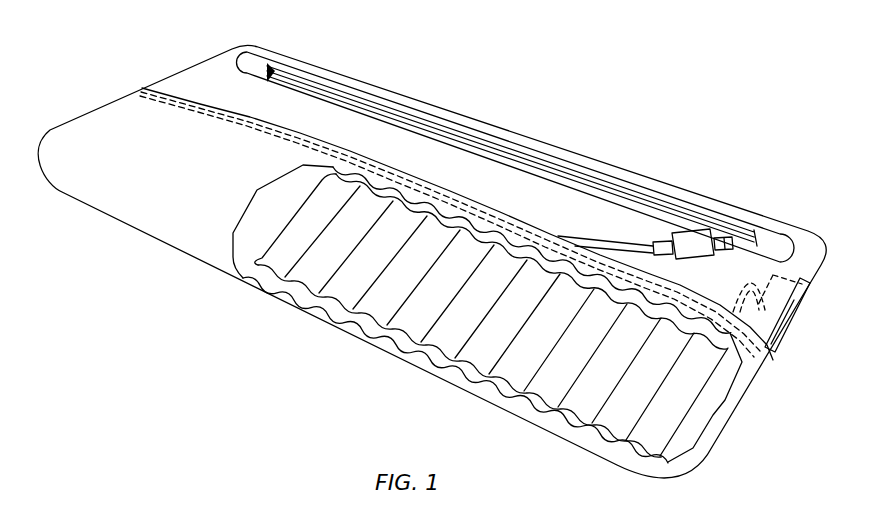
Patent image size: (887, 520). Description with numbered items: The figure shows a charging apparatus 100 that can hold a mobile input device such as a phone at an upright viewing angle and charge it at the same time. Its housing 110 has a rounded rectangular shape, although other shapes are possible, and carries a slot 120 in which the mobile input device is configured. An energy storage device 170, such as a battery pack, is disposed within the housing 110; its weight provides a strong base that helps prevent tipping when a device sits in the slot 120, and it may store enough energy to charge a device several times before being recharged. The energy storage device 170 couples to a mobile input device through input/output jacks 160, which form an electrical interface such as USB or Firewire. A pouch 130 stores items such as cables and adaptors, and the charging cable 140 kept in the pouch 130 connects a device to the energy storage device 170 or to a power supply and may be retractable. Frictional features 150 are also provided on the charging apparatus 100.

The charging apparatus 100 is at (180, 340).
The housing 110 is at (181, 74).
The slot 120 is at (248, 63).
The pouch 130 is at (268, 154).
The charging cable 140 is at (693, 243).
The frictional features 150 is at (397, 110).
The input/output jacks 160 is at (797, 307).
The energy storage device 170 is at (693, 407).